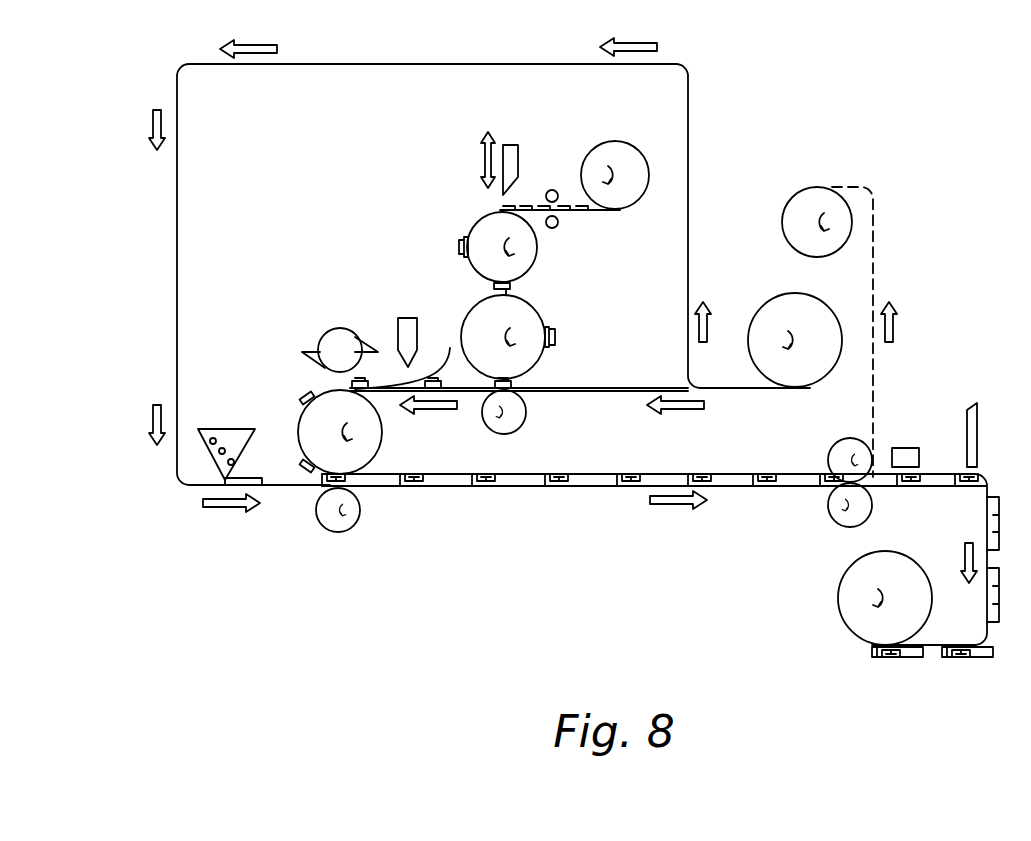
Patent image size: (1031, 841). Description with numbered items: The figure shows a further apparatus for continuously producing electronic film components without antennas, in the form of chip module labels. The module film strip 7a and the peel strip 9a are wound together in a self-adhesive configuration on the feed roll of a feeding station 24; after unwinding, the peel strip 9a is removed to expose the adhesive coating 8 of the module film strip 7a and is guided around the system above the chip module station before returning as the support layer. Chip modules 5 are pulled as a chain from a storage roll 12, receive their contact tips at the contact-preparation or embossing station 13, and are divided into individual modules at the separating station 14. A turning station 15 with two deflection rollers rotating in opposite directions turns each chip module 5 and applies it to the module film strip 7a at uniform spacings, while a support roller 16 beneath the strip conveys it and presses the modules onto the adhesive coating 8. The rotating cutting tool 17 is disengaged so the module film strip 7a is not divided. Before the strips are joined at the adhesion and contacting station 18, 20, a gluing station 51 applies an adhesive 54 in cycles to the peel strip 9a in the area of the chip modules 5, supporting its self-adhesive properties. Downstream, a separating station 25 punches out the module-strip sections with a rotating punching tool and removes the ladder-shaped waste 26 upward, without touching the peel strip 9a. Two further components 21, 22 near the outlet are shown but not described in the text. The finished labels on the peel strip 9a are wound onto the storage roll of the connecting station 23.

The chip module 5 is at (459, 246).
The module film strip 7a is at (607, 391).
The adhesive coating 8 is at (630, 388).
The peel strip 9a is at (280, 487).
The storage roll 12 is at (612, 152).
The contact-preparation or embossing station 13 is at (554, 190).
The separating station 14 is at (515, 152).
The turning station 15 is at (533, 250).
The support roller 16 is at (522, 418).
The rotating cutting tool 17 is at (320, 343).
The adhesion and contacting station 18 is at (375, 437).
The adhesion and contacting station 20 is at (360, 513).
The sensor 21 is at (905, 450).
The guide 22 is at (978, 404).
The connecting station 23 is at (845, 602).
The feeding station 24 is at (770, 316).
The separating station 25 is at (846, 446).
The ladder-shaped waste 26 is at (873, 262).
The gluing station 51 is at (231, 436).
The adhesive 54 is at (262, 480).